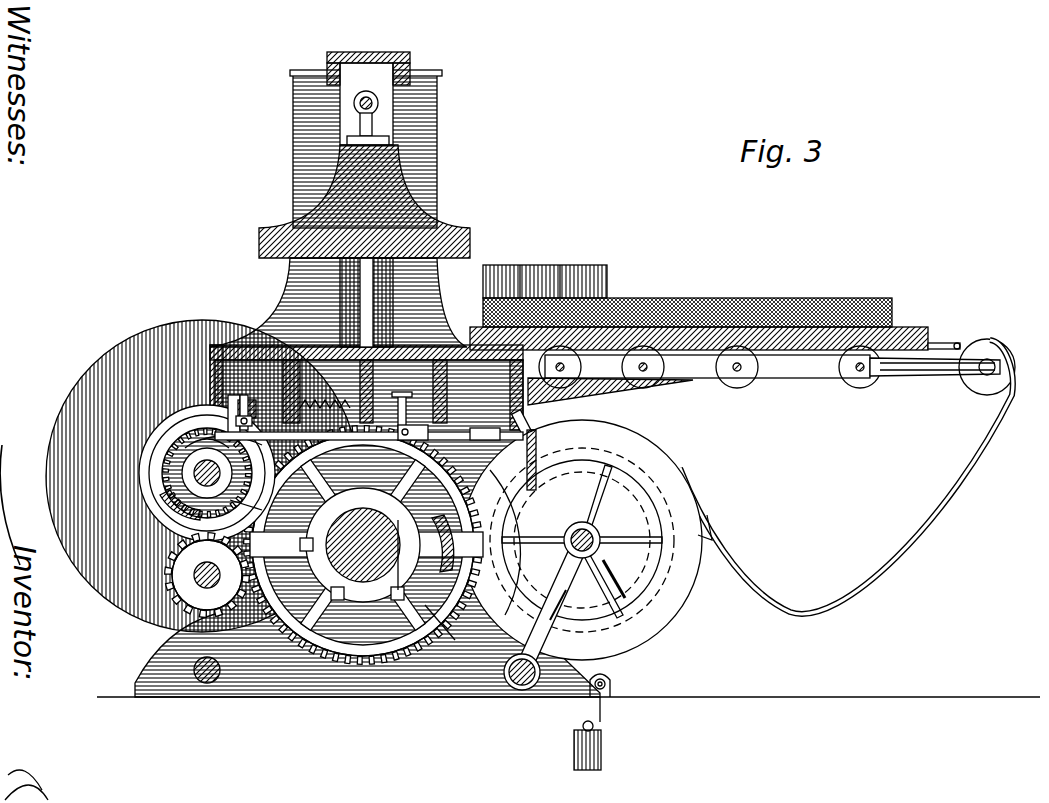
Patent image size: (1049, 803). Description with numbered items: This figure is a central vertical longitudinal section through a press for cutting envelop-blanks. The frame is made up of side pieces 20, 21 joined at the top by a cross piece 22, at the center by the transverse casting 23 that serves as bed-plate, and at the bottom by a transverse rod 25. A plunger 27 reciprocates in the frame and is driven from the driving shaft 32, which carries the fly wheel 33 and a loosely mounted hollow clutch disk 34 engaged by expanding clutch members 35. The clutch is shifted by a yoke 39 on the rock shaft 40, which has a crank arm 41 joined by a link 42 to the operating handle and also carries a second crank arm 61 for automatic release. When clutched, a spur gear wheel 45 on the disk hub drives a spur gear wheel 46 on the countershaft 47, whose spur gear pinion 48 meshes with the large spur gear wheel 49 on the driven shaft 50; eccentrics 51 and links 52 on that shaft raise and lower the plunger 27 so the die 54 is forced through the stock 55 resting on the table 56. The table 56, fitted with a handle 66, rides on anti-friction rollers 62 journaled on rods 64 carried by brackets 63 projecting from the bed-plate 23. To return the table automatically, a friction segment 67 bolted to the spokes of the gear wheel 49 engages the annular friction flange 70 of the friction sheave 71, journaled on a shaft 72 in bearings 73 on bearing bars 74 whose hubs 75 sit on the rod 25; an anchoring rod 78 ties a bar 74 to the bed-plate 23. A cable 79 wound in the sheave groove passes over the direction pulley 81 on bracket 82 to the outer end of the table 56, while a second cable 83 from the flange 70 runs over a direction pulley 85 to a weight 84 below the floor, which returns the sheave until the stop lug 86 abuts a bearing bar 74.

The side piece 20 is at (376, 300).
The side piece 21 is at (220, 672).
The cross piece 22 is at (410, 56).
The transverse casting 23 is at (300, 366).
The transverse rod 25 is at (508, 676).
The plunger 27 is at (430, 210).
The driving shaft 32 is at (195, 480).
The fly wheel 33 is at (64, 486).
The hollow clutch disk 34 is at (170, 428).
The expanding clutch members 35 is at (162, 462).
The yoke 39 is at (225, 400).
The rock shaft 40 is at (372, 492).
The crank arm 41 is at (538, 462).
The link 42 is at (506, 512).
The spur gear wheel 45 is at (168, 518).
The spur gear wheel 46 is at (178, 562).
The countershaft 47 is at (190, 590).
The spur gear pinion 48 is at (196, 582).
The spur gear wheel 49 is at (345, 664).
The driven shaft 50 is at (360, 584).
The eccentrics 51 is at (440, 516).
The links 52 is at (320, 270).
The die 54 is at (572, 265).
The stock 55 is at (700, 292).
The table 56 is at (920, 327).
The crank arm 61 is at (395, 512).
The anti-friction rollers 62 is at (640, 388).
The brackets 63 is at (705, 380).
The rods 64 is at (638, 367).
The handle 66 is at (950, 344).
The friction segment 67 is at (448, 635).
The annular friction flange 70 is at (672, 574).
The friction sheave 71 is at (680, 604).
The shaft 72 is at (560, 560).
The bearings 73 is at (610, 553).
The bearing bars 74 is at (560, 600).
The hubs 75 is at (522, 692).
The anchoring rod 78 is at (530, 420).
The rope or cable 79 is at (770, 580).
The direction pulley 81 is at (975, 385).
The bracket 82 is at (918, 377).
The rope or cable 83 is at (600, 682).
The weight 84 is at (602, 742).
The direction pulley 85 is at (607, 684).
The stop lug 86 is at (616, 598).